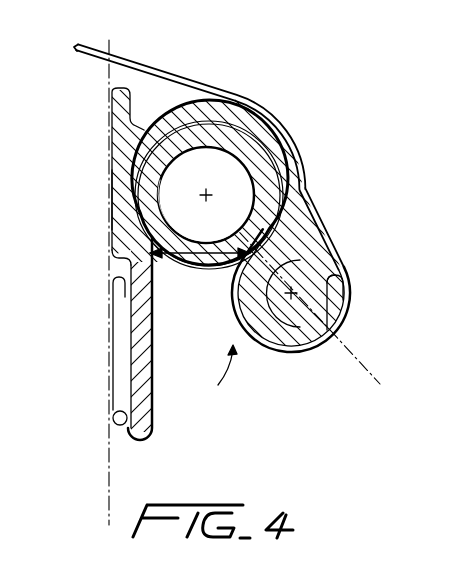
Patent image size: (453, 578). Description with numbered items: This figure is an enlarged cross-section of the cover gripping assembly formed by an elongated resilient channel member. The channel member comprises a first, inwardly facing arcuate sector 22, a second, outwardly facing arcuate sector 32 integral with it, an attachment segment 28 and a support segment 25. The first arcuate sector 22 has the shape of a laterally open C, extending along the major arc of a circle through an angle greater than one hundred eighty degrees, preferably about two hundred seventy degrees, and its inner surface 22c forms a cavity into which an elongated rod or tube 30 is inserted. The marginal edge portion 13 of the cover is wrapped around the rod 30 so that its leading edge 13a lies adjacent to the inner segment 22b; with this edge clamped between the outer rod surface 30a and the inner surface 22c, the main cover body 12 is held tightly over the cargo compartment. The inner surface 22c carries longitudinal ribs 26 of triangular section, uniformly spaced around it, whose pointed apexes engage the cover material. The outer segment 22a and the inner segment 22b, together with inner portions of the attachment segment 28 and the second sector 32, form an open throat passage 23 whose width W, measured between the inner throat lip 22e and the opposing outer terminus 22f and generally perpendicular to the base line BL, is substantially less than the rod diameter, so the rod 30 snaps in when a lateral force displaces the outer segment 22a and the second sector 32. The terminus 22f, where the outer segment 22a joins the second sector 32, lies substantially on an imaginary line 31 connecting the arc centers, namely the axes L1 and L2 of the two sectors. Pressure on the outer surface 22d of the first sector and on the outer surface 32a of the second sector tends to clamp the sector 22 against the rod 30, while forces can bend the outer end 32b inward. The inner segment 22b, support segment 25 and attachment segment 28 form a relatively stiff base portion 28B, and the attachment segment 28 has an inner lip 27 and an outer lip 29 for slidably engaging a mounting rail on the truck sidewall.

The main cover body 12 is at (166, 72).
The marginal edge portion 13 is at (296, 138).
The leading edge 13a is at (165, 285).
The first arcuate sector 22 is at (238, 96).
The outer segment 22a is at (318, 217).
The inner segment 22b is at (126, 233).
The inner surface 22c is at (112, 196).
The outer surface 22d is at (282, 125).
The inner throat lip 22e is at (158, 290).
The outer terminus 22f is at (279, 264).
The throat passage 23 is at (225, 378).
The support segment 25 is at (118, 110).
The longitudinal ribs 26 is at (302, 157).
The inner lip 27 is at (108, 288).
The attachment segment 28 is at (133, 353).
The base portion 28B is at (100, 265).
The outer lip 29 is at (116, 424).
The rod 30 is at (250, 172).
The outer rod surface 30a is at (203, 247).
The imaginary line 31 is at (372, 376).
The second arcuate sector 32 is at (302, 352).
The outer surface 32a is at (350, 320).
The outer end 32b is at (344, 268).
The axis L1 is at (212, 195).
The axis L2 is at (282, 350).
The width W is at (200, 262).
The base line BL is at (112, 394).